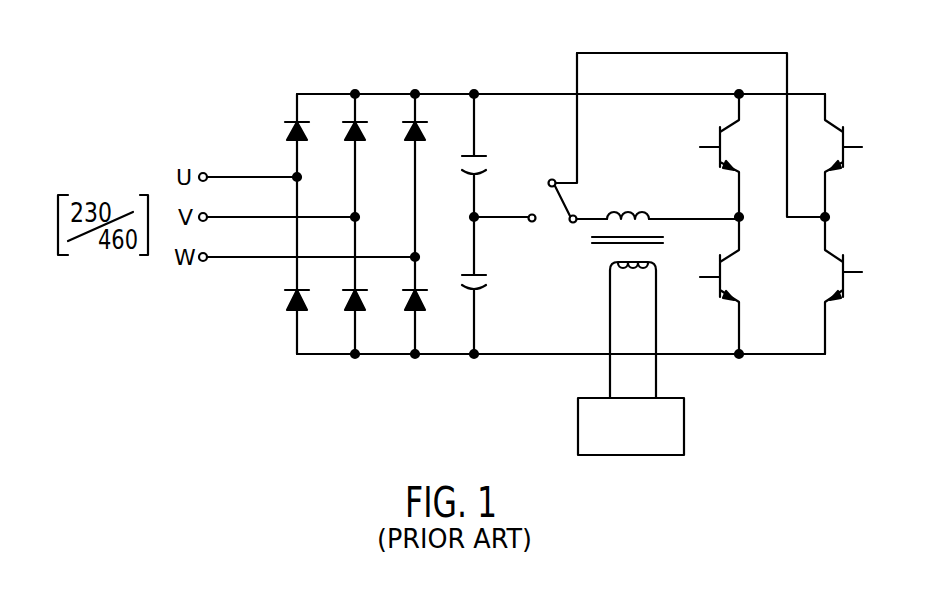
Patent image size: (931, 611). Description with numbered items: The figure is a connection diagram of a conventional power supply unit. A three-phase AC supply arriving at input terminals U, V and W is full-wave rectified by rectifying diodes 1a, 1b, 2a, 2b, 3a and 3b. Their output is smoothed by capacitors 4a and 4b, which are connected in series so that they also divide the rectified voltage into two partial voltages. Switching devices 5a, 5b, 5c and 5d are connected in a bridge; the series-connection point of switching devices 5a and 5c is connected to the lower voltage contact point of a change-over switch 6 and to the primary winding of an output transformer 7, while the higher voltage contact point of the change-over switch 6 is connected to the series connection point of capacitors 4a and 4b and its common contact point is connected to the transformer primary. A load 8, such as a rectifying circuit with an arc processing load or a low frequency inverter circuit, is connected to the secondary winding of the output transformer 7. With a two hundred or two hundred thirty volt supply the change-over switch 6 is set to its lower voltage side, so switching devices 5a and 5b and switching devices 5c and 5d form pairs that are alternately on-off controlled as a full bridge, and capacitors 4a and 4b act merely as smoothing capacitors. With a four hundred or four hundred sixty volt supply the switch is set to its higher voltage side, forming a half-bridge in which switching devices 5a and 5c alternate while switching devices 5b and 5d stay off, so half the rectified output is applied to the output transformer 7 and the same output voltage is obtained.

The rectifying diode 1a is at (288, 132).
The rectifying diode 1b is at (288, 308).
The rectifying diode 2a is at (345, 136).
The rectifying diode 2b is at (351, 313).
The rectifying diode 3a is at (422, 140).
The rectifying diode 3b is at (410, 314).
The capacitor 4a is at (486, 152).
The capacitor 4b is at (484, 279).
The switching device 5a is at (732, 128).
The switching device 5b is at (842, 268).
The switching device 5c is at (722, 281).
The switching device 5d is at (828, 126).
The change-over switch 6 is at (528, 213).
The output transformer 7 is at (640, 212).
The load 8 is at (673, 417).